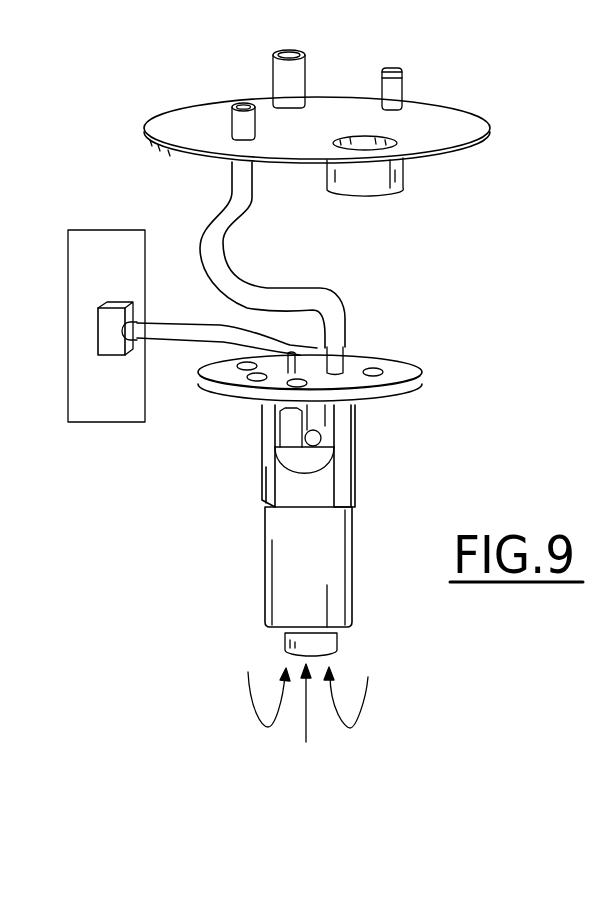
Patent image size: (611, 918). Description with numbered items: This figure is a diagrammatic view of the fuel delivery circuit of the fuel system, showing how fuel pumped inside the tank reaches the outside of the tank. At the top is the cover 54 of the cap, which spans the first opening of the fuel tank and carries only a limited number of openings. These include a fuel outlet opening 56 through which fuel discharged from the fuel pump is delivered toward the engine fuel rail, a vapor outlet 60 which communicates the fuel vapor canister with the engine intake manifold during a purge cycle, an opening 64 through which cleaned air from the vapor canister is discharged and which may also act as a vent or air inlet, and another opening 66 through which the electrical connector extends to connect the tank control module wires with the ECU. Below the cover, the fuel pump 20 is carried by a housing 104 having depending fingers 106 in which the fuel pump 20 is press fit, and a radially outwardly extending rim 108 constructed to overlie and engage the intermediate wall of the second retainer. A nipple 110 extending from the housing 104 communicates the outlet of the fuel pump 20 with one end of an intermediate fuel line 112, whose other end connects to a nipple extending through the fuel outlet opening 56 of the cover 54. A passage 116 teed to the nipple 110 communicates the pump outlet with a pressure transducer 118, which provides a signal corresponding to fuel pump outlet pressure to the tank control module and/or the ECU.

The fuel pump 20 is at (348, 535).
The cover 54 is at (328, 103).
The fuel outlet opening 56 is at (232, 114).
The vapor outlet 60 is at (302, 70).
The opening 64 is at (400, 85).
The opening 66 is at (390, 137).
The housing 104 is at (347, 464).
The depending fingers 106 is at (262, 446).
The rim 108 is at (422, 372).
The nipple 110 is at (341, 356).
The intermediate fuel line 112 is at (287, 285).
The passage 116 is at (331, 315).
The pressure transducer 118 is at (113, 357).